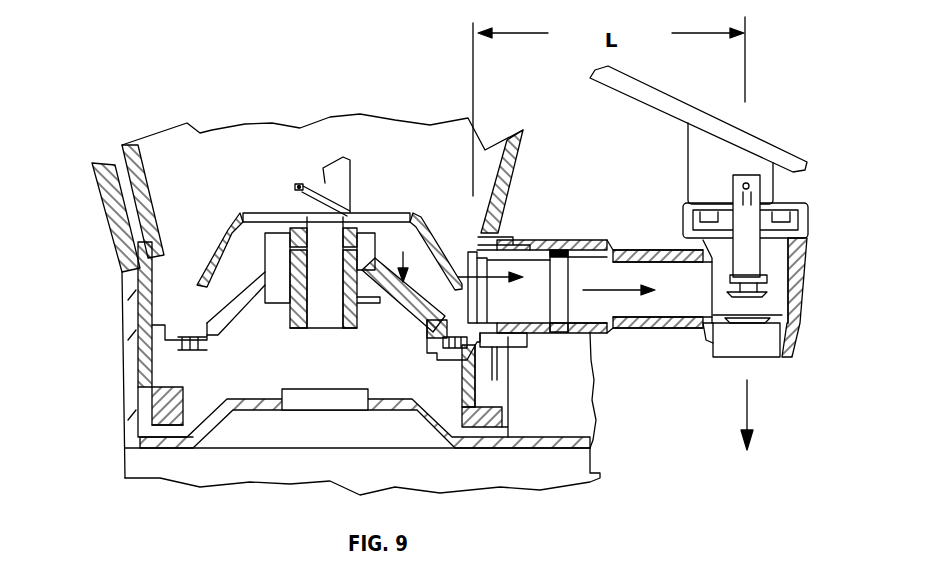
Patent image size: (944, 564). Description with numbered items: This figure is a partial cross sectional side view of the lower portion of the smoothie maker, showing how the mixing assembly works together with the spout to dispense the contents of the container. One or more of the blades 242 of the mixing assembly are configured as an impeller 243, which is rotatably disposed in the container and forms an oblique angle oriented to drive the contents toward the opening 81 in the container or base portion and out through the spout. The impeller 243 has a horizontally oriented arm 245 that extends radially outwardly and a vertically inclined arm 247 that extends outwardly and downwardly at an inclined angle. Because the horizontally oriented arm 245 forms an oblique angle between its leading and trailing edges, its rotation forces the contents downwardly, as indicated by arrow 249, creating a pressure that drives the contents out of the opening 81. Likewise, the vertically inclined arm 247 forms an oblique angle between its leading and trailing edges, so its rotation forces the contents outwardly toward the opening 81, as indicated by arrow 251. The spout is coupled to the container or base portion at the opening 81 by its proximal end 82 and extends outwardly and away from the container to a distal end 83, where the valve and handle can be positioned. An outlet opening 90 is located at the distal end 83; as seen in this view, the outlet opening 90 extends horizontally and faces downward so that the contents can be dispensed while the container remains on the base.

The blade 242 is at (326, 172).
The impeller 243 is at (403, 211).
The horizontally oriented arm 245 is at (278, 213).
The vertically inclined arm 247 is at (230, 228).
The arrow 249 is at (412, 250).
The opening 81 is at (522, 238).
The proximal end 82 is at (520, 340).
The distal end 83 is at (797, 317).
The outlet opening 90 is at (733, 357).
The arrow 251 is at (492, 280).